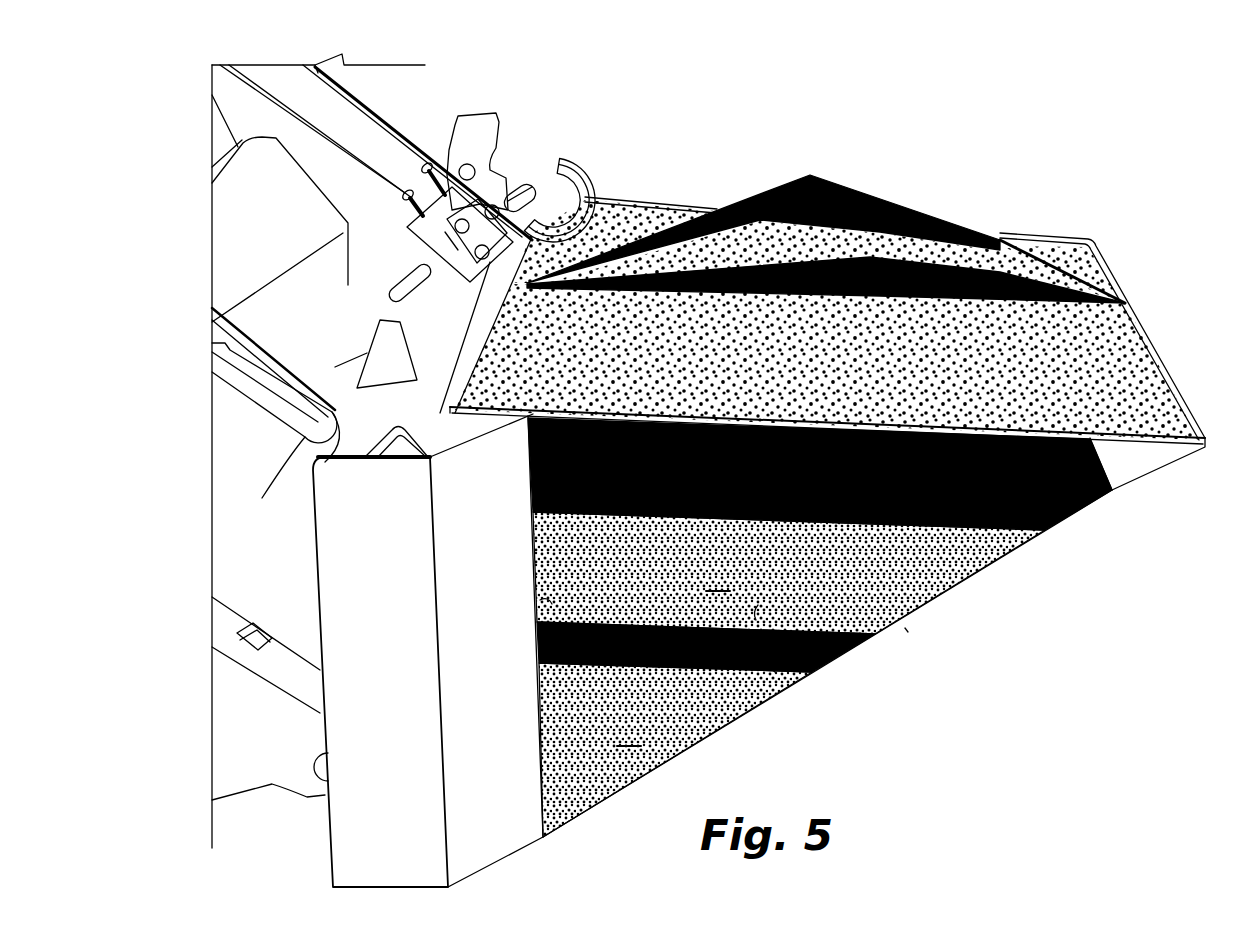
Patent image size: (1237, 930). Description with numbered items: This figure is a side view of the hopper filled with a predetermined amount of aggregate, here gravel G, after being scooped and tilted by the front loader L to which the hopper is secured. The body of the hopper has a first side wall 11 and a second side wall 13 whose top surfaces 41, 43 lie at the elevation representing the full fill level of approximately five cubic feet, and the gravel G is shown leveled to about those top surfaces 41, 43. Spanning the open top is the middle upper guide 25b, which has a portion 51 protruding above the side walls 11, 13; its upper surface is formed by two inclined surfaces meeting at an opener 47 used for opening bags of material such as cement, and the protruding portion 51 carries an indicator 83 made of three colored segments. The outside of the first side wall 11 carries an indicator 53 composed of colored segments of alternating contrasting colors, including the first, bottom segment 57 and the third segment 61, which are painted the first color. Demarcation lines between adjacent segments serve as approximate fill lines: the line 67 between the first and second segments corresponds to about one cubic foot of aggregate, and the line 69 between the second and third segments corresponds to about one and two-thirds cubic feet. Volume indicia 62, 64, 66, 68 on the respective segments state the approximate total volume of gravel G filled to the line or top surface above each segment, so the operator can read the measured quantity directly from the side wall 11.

The front loader L is at (395, 153).
The first side wall 11 is at (940, 580).
The second side wall 13 is at (650, 190).
The middle upper guide 25b is at (917, 205).
The top surface of first side wall 41 is at (1087, 515).
The top surface of second side wall 43 is at (990, 230).
The opener 47 is at (785, 175).
The protruding portion of middle upper guide 51 is at (960, 226).
The indicator 53 is at (903, 632).
The first segment 57 is at (629, 734).
The third segment 61 is at (718, 579).
The volume indicia 62 is at (630, 692).
The volume indicia 64 is at (537, 652).
The volume indicia 66 is at (615, 538).
The demarcation line 67 is at (770, 672).
The volume indicia 68 is at (533, 486).
The demarcation line 69 is at (547, 618).
The indicator on middle upper guide 83 is at (875, 185).
The gravel G is at (1118, 375).